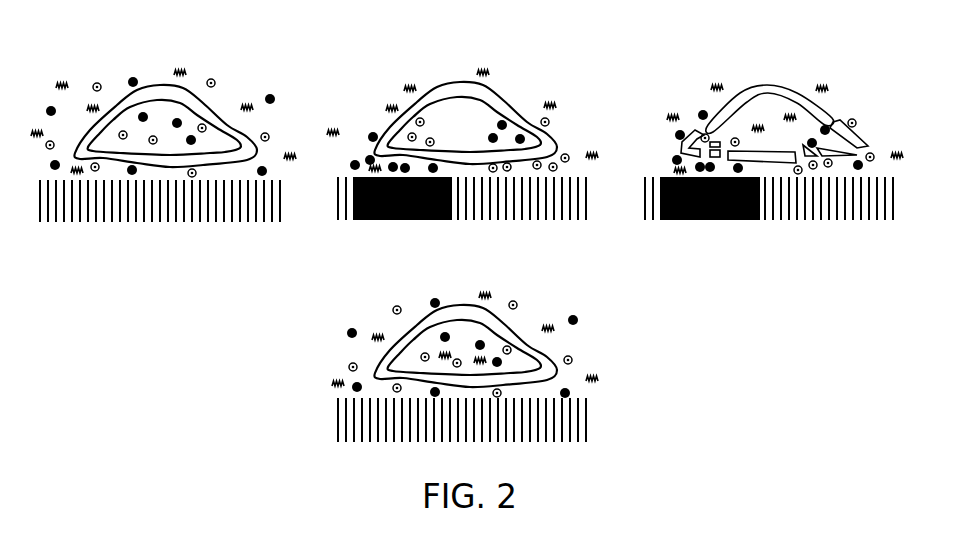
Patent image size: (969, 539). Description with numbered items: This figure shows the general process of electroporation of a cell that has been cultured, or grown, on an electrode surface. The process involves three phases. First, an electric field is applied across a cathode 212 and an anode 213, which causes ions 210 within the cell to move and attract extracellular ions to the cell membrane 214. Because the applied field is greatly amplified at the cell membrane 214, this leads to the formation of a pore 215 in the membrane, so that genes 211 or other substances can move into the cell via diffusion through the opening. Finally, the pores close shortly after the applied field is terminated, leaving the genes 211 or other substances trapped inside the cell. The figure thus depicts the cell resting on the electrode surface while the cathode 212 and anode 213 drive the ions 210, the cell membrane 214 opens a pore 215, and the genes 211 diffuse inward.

The ions 210 is at (137, 117).
The genes 211 is at (246, 101).
The cathode 212 is at (392, 221).
The anode 213 is at (517, 221).
The cell membrane 214 is at (511, 103).
The pore 215 is at (837, 122).